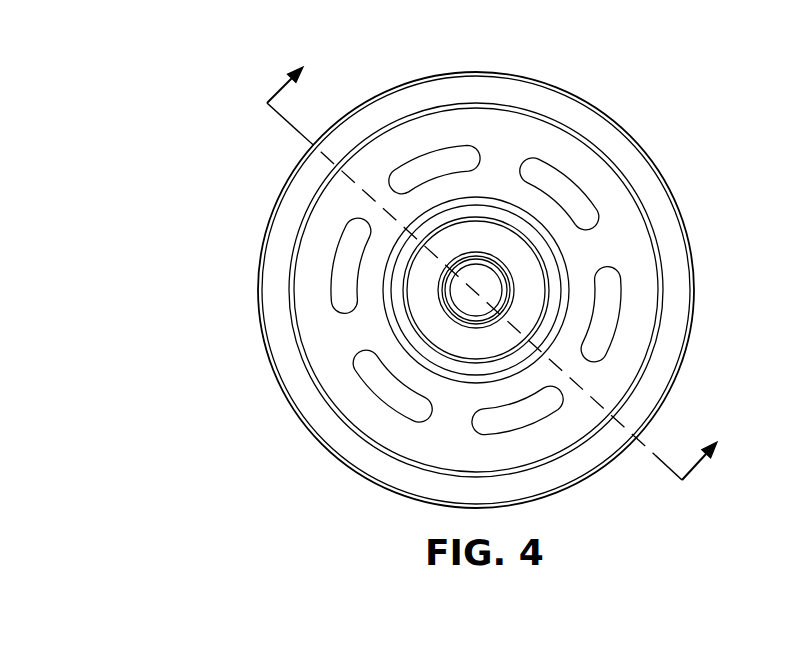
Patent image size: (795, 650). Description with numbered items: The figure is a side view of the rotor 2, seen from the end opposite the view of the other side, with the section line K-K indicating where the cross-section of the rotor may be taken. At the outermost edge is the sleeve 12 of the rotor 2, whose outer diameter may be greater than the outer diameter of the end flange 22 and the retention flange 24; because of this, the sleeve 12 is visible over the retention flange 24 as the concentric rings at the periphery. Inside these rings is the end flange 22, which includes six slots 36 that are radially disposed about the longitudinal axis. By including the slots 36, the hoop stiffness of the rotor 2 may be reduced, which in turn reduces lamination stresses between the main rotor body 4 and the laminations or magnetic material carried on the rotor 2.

The rotor 2 is at (713, 77).
The main rotor body 4 is at (652, 148).
The sleeve 12 is at (260, 317).
The end flange 22 is at (312, 245).
The retention flange 24 is at (270, 278).
The slots 36 is at (467, 163).